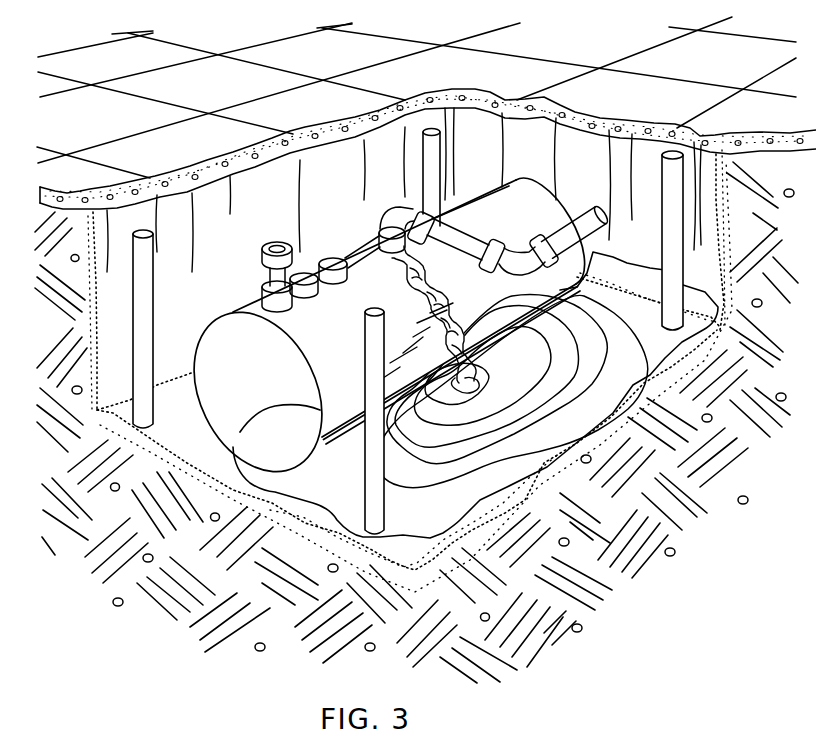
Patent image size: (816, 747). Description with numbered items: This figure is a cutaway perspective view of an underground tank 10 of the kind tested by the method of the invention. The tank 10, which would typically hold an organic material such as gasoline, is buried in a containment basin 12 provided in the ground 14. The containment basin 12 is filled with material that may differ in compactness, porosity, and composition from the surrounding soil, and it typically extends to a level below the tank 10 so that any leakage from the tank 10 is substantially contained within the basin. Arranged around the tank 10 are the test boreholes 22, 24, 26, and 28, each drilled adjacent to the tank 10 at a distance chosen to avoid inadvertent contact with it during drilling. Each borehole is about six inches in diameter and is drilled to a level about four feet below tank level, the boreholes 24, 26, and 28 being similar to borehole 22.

The underground tank 10 is at (338, 330).
The containment basin 12 is at (190, 294).
The ground 14 is at (58, 322).
The borehole 22 is at (435, 130).
The test borehole 24 is at (673, 156).
The test borehole 26 is at (373, 311).
The test borehole 28 is at (138, 231).